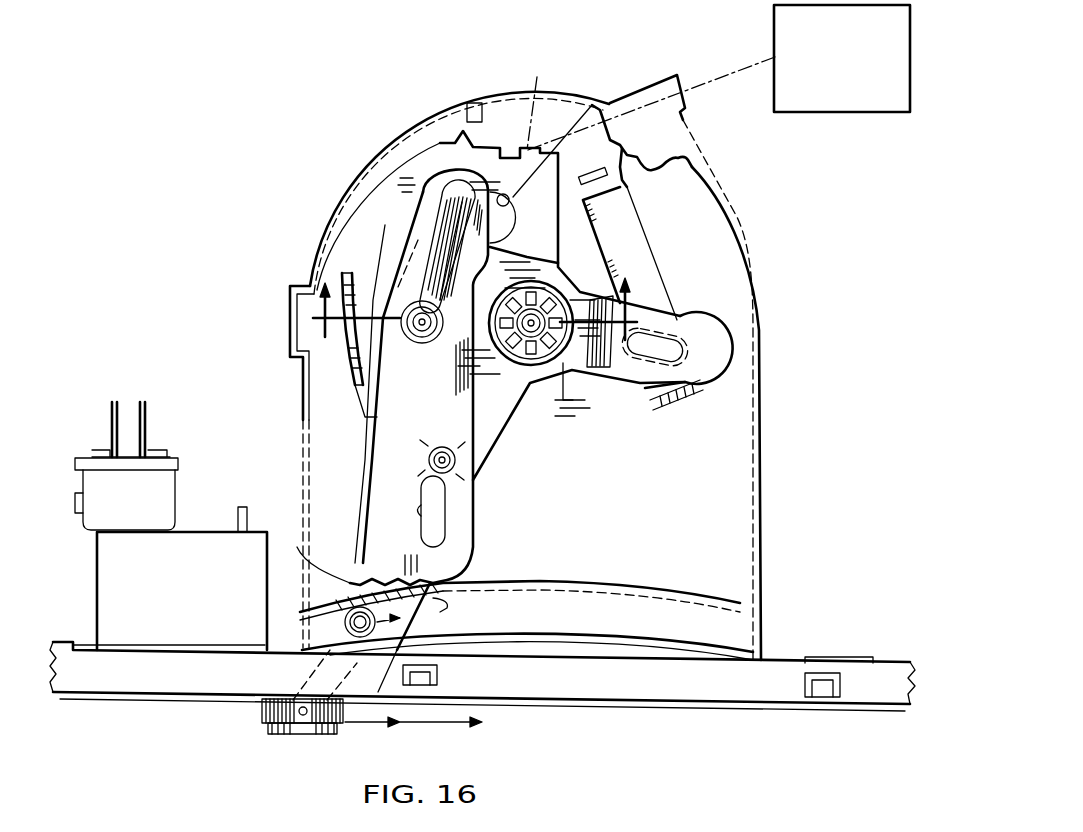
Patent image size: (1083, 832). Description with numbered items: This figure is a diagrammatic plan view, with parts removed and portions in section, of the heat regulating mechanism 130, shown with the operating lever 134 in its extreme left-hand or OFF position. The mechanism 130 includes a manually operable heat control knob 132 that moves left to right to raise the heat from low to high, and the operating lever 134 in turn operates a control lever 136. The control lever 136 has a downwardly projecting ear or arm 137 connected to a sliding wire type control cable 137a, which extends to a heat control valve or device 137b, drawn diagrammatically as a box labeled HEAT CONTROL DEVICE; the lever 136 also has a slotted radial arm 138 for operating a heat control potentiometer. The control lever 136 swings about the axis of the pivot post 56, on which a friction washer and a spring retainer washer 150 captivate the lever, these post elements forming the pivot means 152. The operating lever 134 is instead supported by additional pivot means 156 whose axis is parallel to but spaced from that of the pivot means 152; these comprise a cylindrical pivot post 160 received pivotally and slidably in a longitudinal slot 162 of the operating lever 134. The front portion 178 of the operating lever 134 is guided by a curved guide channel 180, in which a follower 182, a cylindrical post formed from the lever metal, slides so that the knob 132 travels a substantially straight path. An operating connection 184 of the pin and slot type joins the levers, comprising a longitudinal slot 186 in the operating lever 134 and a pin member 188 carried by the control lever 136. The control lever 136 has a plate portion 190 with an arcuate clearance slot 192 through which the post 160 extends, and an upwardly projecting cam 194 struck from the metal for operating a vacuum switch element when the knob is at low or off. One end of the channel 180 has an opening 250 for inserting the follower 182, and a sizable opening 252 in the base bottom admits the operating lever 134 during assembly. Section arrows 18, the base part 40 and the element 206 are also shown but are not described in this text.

The section line arrows 18 is at (478, 294).
The base rail 40 is at (857, 690).
The pivot post 56 is at (531, 305).
The heat regulating mechanism 130 is at (337, 410).
The heat control knob 132 is at (300, 736).
The operating lever 134 is at (473, 517).
The control lever 136 is at (503, 433).
The downwardly projecting ear or arm 137 is at (537, 77).
The sliding wire type control cable 137a is at (737, 58).
The heat control valve or device 137b is at (825, 112).
The slotted radial arm 138 is at (700, 337).
The spring retainer washer 150 is at (568, 343).
The pivot means 152 is at (535, 385).
The additional pivot means 156 is at (393, 347).
The cylindrical pivot post 160 is at (438, 265).
The longitudinal slot 162 is at (445, 194).
The front portion 178 is at (297, 547).
The guide channel 180 is at (445, 605).
The follower 182 is at (340, 636).
The operating connection 184 is at (488, 470).
The longitudinal slot 186 is at (413, 510).
The pin member 188 is at (427, 477).
The plate portion 190 is at (440, 143).
The arcuate clearance slot 192 is at (592, 105).
The cam 194 is at (342, 353).
The motor 206 is at (68, 442).
The opening 250 is at (340, 615).
The opening 252 is at (332, 600).